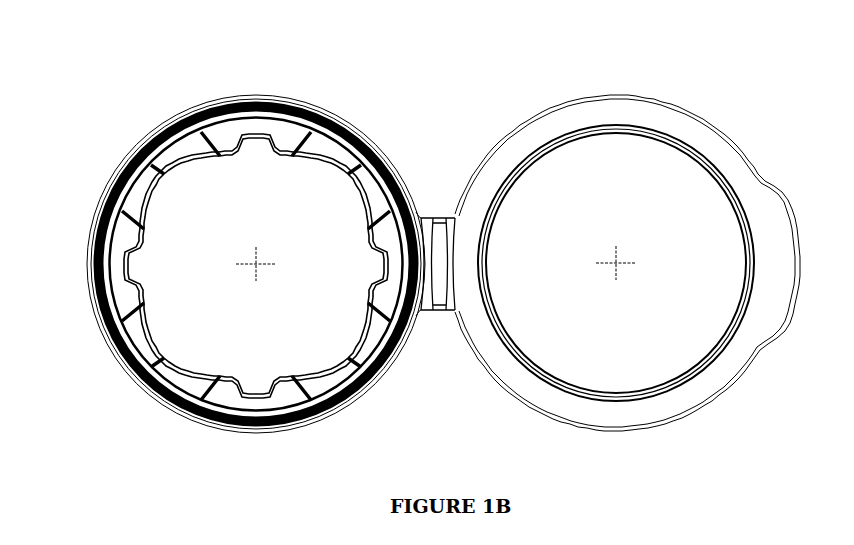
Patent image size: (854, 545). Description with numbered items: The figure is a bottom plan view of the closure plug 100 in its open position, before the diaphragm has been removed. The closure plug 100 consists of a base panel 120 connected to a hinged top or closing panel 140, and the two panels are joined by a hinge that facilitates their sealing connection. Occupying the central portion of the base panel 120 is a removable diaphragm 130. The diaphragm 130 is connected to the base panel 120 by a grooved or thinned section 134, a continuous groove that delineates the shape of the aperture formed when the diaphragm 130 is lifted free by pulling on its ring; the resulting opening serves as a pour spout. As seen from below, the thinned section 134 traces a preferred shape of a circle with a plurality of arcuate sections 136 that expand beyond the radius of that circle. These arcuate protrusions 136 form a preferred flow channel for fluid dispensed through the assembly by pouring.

The closure plug 100 is at (108, 128).
The base panel 120 is at (288, 110).
The removable diaphragm 130 is at (435, 218).
The grooved or thinned section 134 is at (198, 160).
The arcuate section 136 is at (376, 266).
The closing panel 140 is at (650, 312).